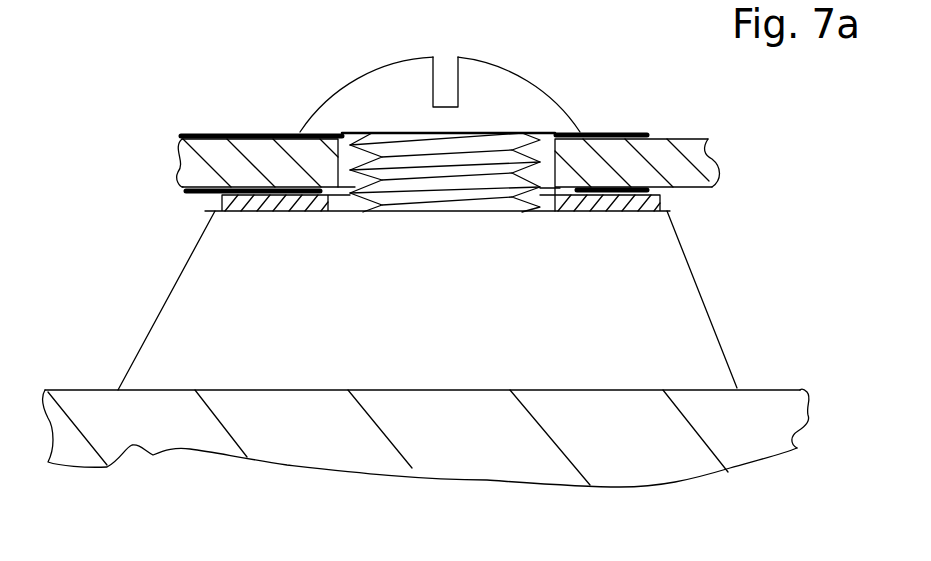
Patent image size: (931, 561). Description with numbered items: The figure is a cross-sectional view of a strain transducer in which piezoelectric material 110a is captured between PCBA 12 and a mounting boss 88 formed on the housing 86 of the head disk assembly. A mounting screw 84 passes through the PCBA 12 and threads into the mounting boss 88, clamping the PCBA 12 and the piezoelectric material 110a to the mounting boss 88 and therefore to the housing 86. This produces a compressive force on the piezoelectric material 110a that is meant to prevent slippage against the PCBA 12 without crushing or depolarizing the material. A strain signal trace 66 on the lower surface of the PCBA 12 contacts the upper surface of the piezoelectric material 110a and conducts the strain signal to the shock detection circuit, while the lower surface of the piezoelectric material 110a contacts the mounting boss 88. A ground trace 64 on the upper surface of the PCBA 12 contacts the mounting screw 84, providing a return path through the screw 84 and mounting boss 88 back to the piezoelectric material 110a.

The PCBA 12 is at (712, 155).
The ground trace 64 is at (196, 133).
The strain signal trace 66 is at (196, 195).
The mounting screw 84 is at (348, 85).
The housing 86 is at (75, 390).
The mounting boss 88 is at (168, 299).
The piezoelectric material 110a is at (667, 200).